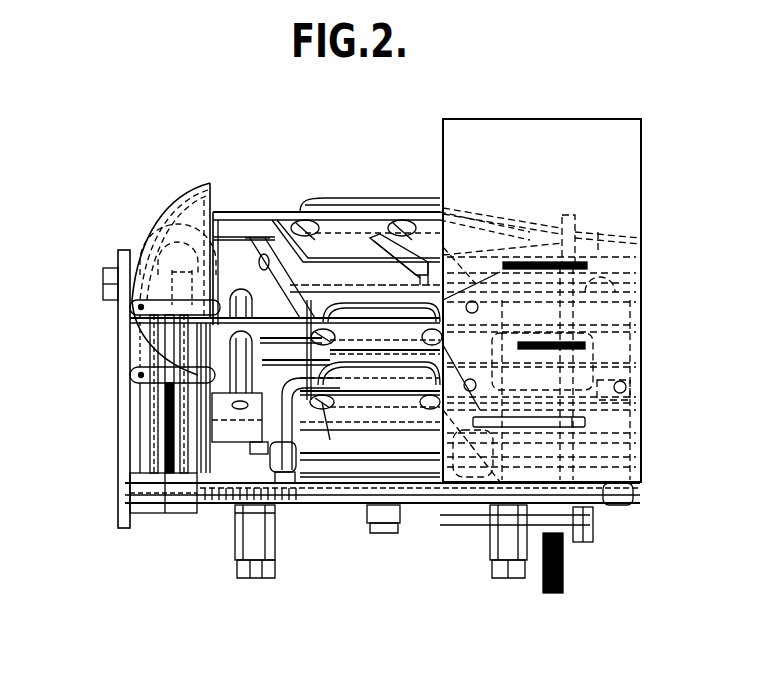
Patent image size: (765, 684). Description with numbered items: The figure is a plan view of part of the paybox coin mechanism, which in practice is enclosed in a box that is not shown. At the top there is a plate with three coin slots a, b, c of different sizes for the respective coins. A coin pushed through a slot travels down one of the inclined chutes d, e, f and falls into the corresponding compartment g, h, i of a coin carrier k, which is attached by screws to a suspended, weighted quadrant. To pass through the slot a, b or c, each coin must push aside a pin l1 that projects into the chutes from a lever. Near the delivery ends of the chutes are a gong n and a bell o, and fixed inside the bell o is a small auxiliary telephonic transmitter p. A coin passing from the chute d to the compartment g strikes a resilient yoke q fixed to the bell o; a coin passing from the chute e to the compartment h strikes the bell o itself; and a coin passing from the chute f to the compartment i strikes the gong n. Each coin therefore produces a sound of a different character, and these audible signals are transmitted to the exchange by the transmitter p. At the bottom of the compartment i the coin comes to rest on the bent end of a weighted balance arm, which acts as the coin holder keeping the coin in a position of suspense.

The coin slot a is at (582, 266).
The coin slot b is at (592, 345).
The coin slot c is at (592, 422).
The inclined chute d is at (338, 340).
The inclined chute e is at (372, 345).
The inclined chute f is at (368, 395).
The compartment g is at (228, 300).
The compartment h is at (154, 394).
The compartment i is at (154, 446).
The coin carrier k is at (142, 470).
The gong n is at (163, 490).
The bell o is at (167, 205).
The auxiliary telephonic transmitter p is at (130, 248).
The resilient yoke q is at (192, 225).
The pin l1 is at (575, 502).